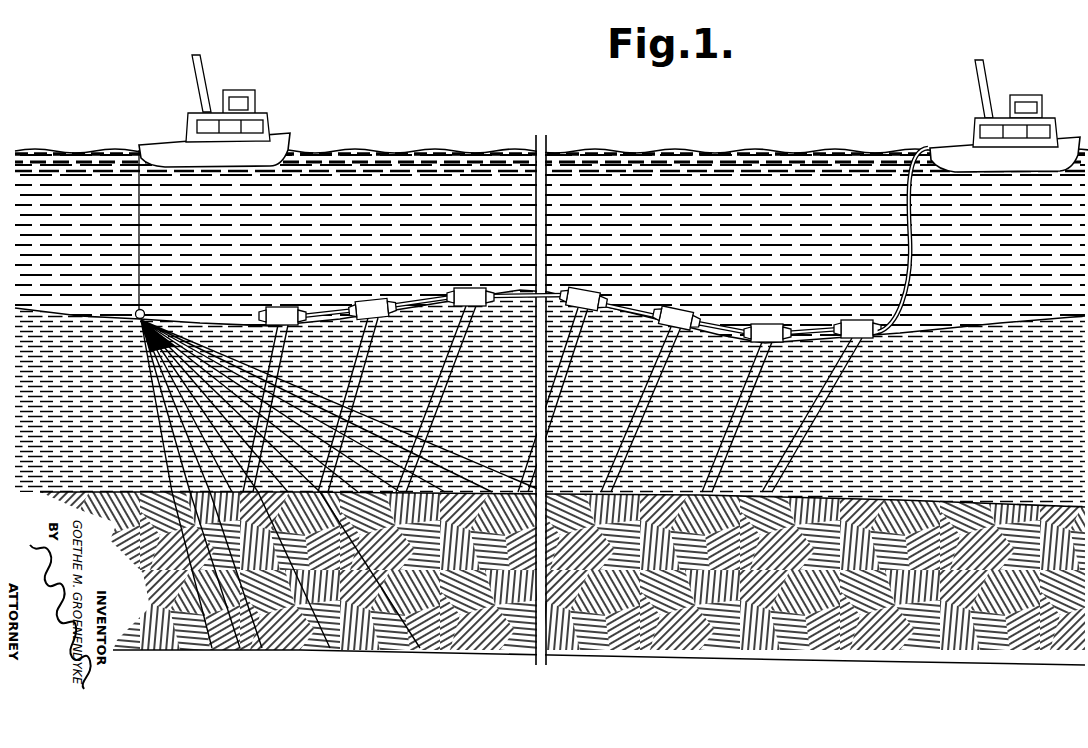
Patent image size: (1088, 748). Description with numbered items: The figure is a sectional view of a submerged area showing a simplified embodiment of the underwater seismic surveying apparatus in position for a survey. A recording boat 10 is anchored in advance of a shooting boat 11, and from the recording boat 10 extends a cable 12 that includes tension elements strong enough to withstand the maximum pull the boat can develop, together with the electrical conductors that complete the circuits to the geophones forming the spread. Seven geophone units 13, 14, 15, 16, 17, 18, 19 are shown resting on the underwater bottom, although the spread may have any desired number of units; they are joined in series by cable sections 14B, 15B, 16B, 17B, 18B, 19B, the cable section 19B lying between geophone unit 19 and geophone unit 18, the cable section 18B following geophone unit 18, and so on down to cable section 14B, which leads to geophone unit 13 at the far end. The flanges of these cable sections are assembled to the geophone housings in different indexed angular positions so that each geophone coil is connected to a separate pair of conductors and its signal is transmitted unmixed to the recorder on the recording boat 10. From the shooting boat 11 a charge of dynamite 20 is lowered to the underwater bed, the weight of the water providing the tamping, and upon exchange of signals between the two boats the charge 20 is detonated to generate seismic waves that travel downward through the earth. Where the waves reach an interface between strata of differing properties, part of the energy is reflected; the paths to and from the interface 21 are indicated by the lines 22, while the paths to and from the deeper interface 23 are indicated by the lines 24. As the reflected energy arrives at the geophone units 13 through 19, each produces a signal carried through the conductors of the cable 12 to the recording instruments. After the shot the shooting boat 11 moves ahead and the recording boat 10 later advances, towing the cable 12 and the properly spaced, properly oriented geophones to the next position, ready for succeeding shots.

The recording boat 10 is at (952, 110).
The shooting boat 11 is at (292, 104).
The cable 12 is at (897, 264).
The geophone unit 13 is at (283, 307).
The geophone unit 14 is at (372, 301).
The cable section 14B is at (336, 305).
The geophone unit 15 is at (472, 289).
The cable section 15B is at (434, 291).
The geophone unit 16 is at (583, 291).
The cable section 16B is at (519, 294).
The geophone unit 17 is at (677, 310).
The cable section 17B is at (645, 297).
The geophone unit 18 is at (768, 325).
The cable section 18B is at (735, 316).
The geophone unit 19 is at (857, 321).
The cable section 19B is at (815, 329).
The charge of dynamite 20 is at (147, 311).
The interface 21 is at (80, 492).
The lines 22 is at (538, 399).
The interface 23 is at (564, 577).
The lines 24 is at (557, 399).